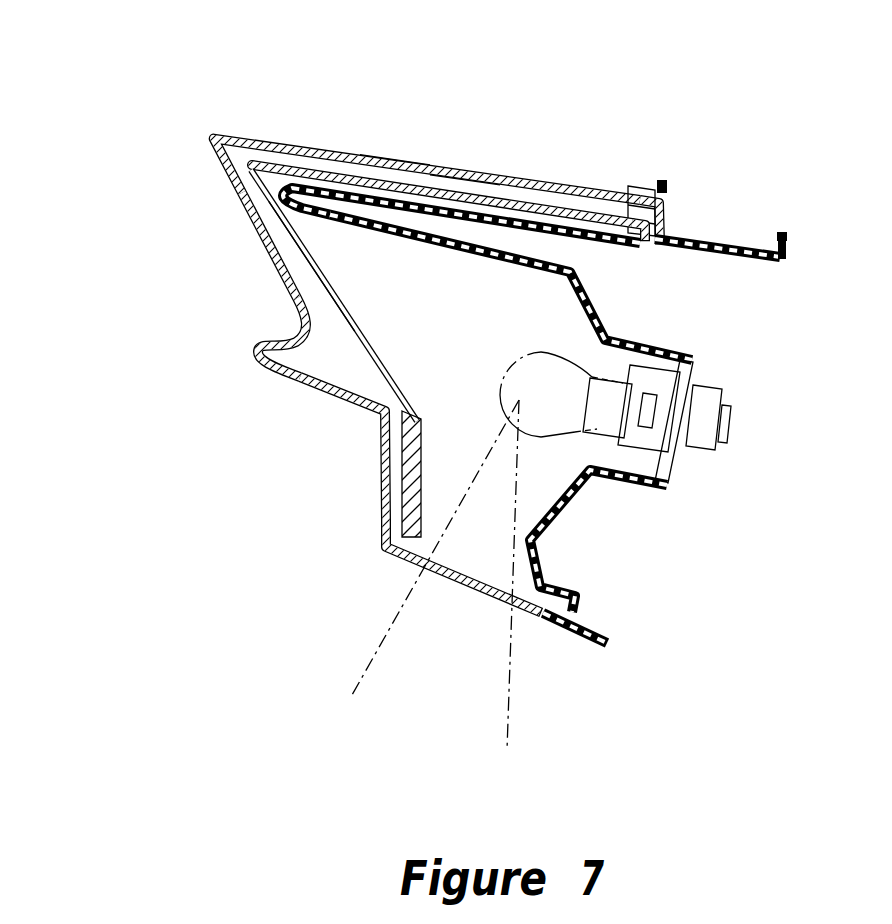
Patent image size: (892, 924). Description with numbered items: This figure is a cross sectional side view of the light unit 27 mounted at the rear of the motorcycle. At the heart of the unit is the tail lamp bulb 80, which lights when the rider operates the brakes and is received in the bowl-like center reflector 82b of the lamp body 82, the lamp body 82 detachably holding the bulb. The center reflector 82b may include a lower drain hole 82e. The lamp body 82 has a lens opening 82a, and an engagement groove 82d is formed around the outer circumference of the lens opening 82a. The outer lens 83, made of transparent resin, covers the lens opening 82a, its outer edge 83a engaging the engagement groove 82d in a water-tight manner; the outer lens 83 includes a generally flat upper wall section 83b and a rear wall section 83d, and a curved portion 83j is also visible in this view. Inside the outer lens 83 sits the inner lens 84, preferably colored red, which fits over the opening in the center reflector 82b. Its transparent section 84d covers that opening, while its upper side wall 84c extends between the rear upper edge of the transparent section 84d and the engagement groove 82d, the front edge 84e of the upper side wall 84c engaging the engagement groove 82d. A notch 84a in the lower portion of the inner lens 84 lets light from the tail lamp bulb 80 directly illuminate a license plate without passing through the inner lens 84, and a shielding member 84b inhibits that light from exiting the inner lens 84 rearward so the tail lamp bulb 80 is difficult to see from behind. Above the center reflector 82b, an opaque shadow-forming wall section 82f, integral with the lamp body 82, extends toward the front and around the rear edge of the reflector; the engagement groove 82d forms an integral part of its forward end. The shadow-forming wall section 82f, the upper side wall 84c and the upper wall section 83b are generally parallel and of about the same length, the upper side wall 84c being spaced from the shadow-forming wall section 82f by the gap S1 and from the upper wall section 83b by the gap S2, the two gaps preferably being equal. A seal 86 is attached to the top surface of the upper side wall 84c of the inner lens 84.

The light unit 27 is at (433, 383).
The tail lamp bulb 80 is at (533, 352).
The lamp body 82 is at (753, 245).
The lens opening 82a is at (537, 614).
The center reflector 82b is at (590, 285).
The engagement groove 82d is at (655, 228).
The lower drain hole 82e is at (580, 616).
The shadow-forming wall section 82f is at (527, 222).
The outer lens 83 is at (316, 150).
The outer edge 83a is at (632, 185).
The upper wall section 83b is at (460, 170).
The rear wall section 83d is at (272, 248).
The curved portion of housing 83j is at (260, 362).
The inner lens 84 is at (364, 352).
The notch 84a is at (400, 557).
The shielding member 84b is at (397, 463).
The upper side wall 84c is at (490, 200).
The transparent section 84d is at (307, 265).
The front edge 84e is at (646, 240).
The seal 86 is at (397, 162).
The gap S1 is at (447, 235).
The gap S2 is at (437, 178).